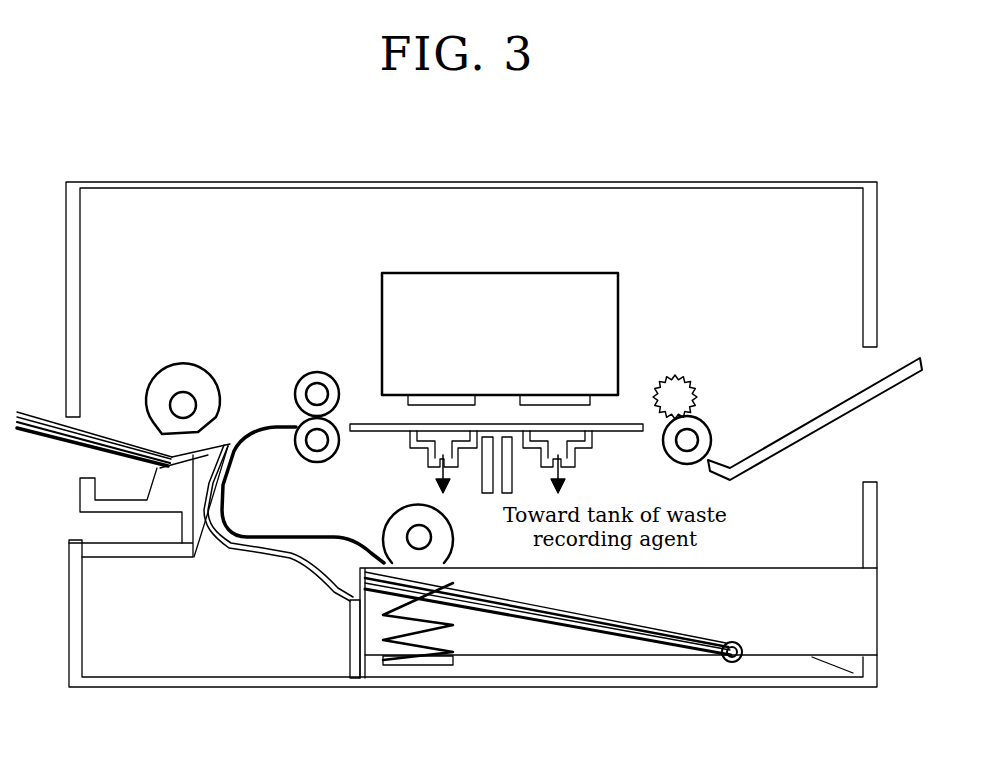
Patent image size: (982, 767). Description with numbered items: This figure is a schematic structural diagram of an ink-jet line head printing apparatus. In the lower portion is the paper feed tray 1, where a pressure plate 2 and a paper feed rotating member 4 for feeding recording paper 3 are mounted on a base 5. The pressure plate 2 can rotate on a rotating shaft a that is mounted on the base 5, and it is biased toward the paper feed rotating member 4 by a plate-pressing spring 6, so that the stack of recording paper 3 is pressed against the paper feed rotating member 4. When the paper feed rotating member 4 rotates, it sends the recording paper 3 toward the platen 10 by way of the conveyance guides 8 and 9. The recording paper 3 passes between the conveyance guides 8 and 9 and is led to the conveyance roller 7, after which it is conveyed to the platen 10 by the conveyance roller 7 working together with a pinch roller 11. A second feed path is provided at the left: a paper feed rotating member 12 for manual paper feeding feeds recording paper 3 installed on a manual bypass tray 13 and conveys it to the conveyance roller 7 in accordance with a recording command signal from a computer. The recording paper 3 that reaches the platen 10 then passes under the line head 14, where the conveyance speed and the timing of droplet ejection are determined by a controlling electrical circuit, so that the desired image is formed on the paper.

The paper feed tray 1 is at (550, 649).
The pressure plate 2 is at (660, 658).
The recording paper 3 is at (97, 437).
The paper feed rotating member 4 is at (404, 512).
The base 5 is at (175, 687).
The plate-pressing spring 6 is at (413, 665).
The conveyance roller 7 is at (312, 463).
The conveyance guide 8 is at (257, 549).
The conveyance guide 9 is at (272, 429).
The platen 10 is at (638, 424).
The pinch roller 11 is at (318, 373).
The paper feed rotating member for manual paper feeding 12 is at (180, 366).
The manual bypass tray 13 is at (43, 404).
The line head 14 is at (598, 273).
The rotating shaft a is at (733, 663).